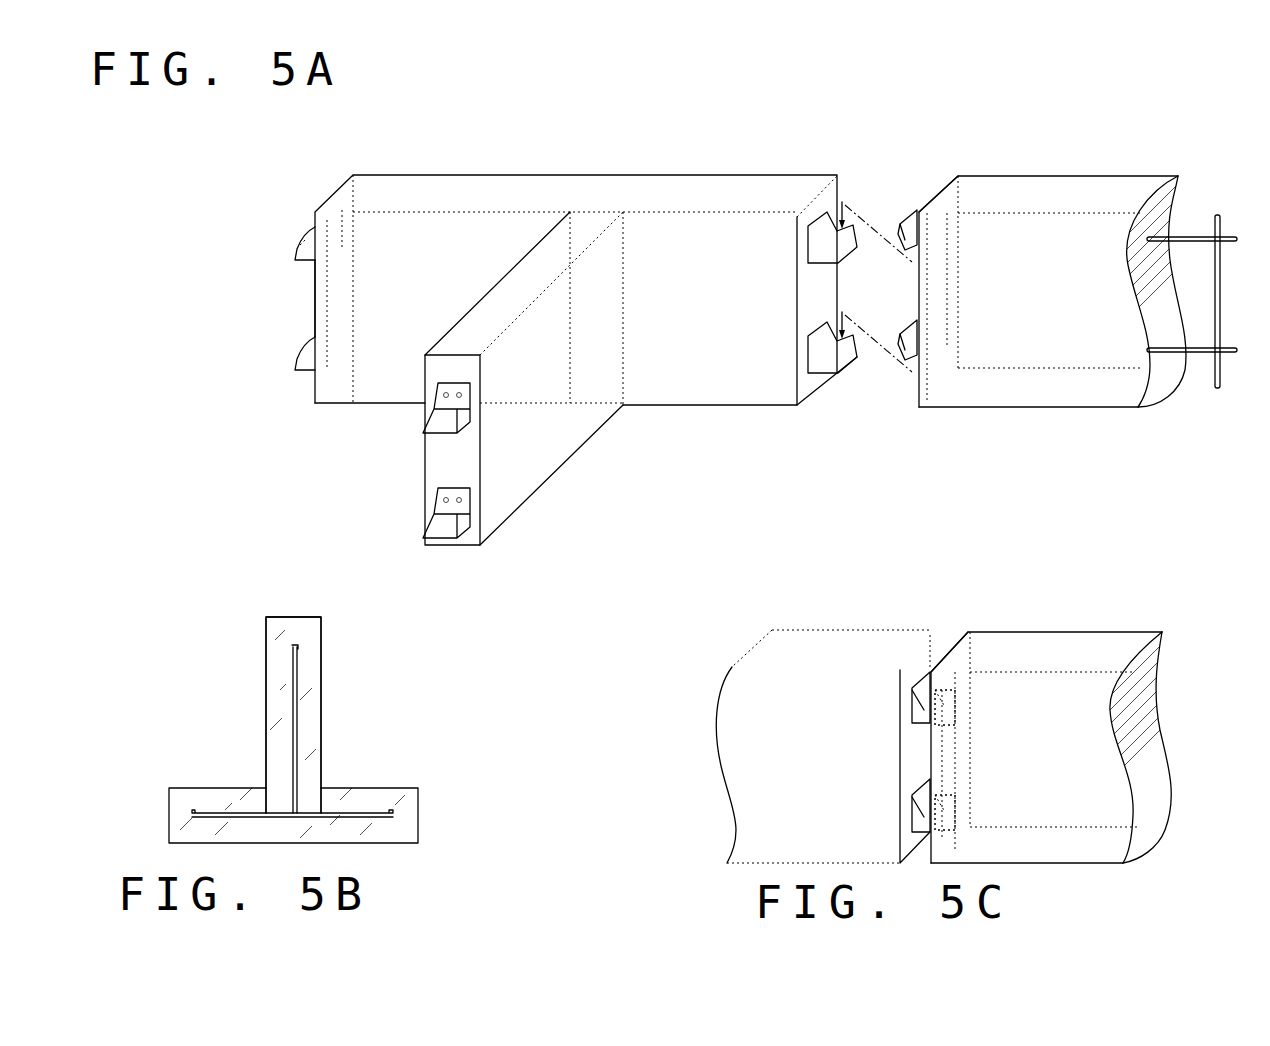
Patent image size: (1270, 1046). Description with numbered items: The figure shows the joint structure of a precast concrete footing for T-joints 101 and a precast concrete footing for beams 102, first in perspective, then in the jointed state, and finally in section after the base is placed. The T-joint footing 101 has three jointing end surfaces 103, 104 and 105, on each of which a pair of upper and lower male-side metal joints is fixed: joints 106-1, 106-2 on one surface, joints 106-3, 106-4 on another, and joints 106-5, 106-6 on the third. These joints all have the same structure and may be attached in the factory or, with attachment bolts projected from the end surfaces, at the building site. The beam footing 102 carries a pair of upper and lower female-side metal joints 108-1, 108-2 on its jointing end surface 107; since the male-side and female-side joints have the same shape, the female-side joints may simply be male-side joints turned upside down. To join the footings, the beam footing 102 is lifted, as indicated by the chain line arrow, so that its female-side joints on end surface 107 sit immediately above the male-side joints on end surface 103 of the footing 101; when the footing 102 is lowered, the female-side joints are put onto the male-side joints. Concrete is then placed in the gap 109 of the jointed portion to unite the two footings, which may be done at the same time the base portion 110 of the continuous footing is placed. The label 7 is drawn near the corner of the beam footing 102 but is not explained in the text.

In FIG. 5A, the precast concrete footing for T-joints 101 is at (621, 140).
In FIG. 5B, the precast concrete footing for T-joints 101 is at (328, 700).
In FIG. 5C, the precast concrete footing for T-joints 101 is at (861, 607).
In FIG. 5A, the precast concrete footing for beams 102 is at (1058, 144).
In FIG. 5B, the precast concrete footing for beams 102 is at (293, 715).
In FIG. 5C, the precast concrete footing for beams 102 is at (1061, 609).
In FIG. 5A, the jointing end surface 103 is at (878, 288).
In FIG. 5C, the jointing end surface 103 is at (945, 643).
In FIG. 5A, the jointing end surface 104 is at (430, 458).
In FIG. 5A, the jointing end surface 105 is at (315, 300).
In FIG. 5A, the male-side metal joint 106-1 is at (826, 214).
In FIG. 5C, the male-side metal joint 106-1 is at (861, 712).
In FIG. 5A, the male-side metal joint 106-2 is at (853, 362).
In FIG. 5C, the male-side metal joint 106-2 is at (861, 805).
In FIG. 5A, the male-side metal joint 106-3 is at (420, 430).
In FIG. 5A, the male-side metal joint 106-4 is at (413, 537).
In FIG. 5A, the male-side metal joint 106-5 is at (296, 259).
In FIG. 5A, the male-side metal joint 106-6 is at (294, 370).
In FIG. 5C, the jointing end surface 107 is at (940, 655).
In FIG. 5A, the female-side metal joint 108-1 is at (908, 220).
In FIG. 5C, the female-side metal joint 108-1 is at (955, 703).
In FIG. 5A, the female-side metal joint 108-2 is at (912, 367).
In FIG. 5C, the female-side metal joint 108-2 is at (955, 790).
In FIG. 5C, the gap 109 is at (940, 655).
In FIG. 5B, the base portion 110 is at (357, 798).
In FIG. 5A, the corner edge 7 is at (925, 208).